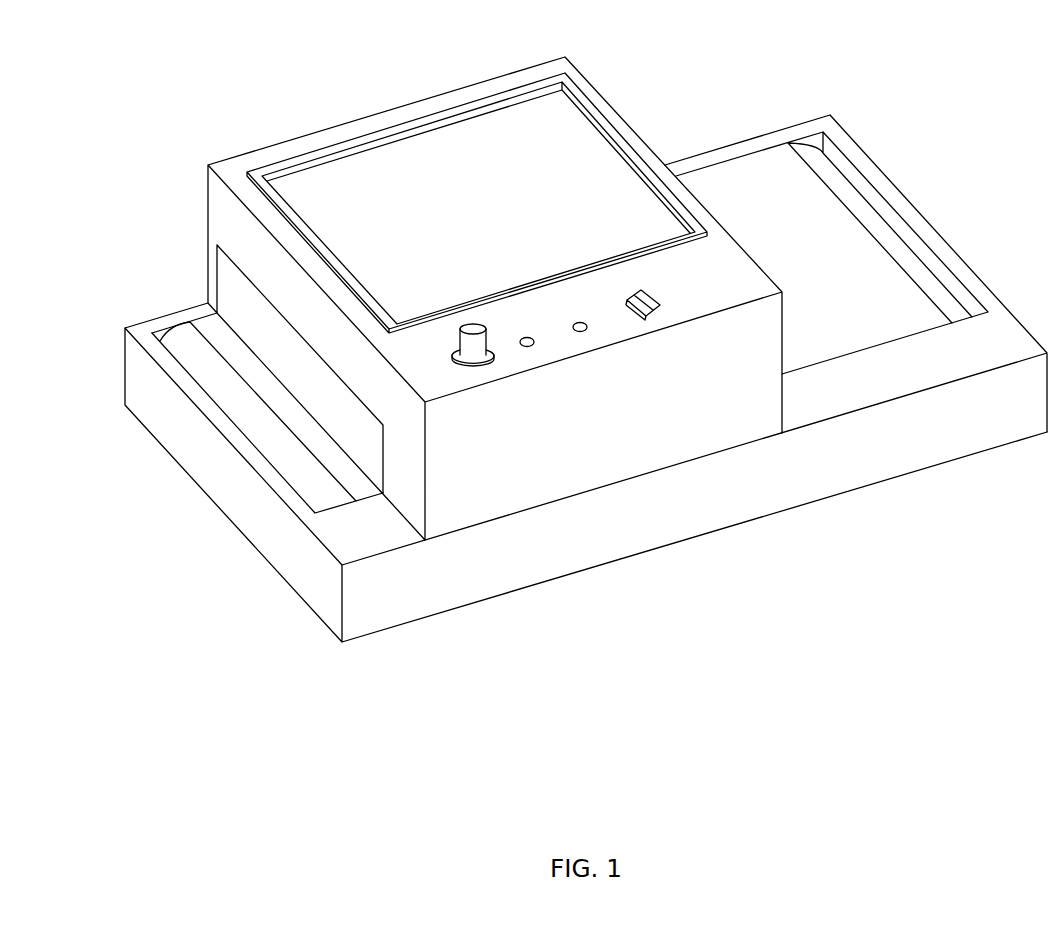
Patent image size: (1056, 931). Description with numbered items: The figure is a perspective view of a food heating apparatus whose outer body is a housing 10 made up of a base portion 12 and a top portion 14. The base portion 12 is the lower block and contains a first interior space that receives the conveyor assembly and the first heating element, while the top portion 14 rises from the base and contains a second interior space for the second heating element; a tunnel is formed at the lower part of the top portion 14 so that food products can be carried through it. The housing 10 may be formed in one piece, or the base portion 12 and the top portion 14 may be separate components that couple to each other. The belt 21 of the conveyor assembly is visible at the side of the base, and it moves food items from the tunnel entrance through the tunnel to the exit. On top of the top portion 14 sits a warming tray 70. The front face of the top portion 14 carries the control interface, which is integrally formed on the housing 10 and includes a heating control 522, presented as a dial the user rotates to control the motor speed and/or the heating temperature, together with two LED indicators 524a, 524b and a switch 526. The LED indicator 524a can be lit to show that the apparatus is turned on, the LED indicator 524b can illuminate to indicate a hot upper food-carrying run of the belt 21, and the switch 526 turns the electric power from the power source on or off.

The housing 10 is at (765, 467).
The base portion 12 is at (388, 602).
The top portion 14 is at (232, 168).
The belt 21 is at (747, 168).
The warming tray 70 is at (483, 130).
The heating control 522 is at (472, 348).
The LED indicator 524a is at (533, 344).
The LED indicator 524b is at (587, 330).
The switch 526 is at (658, 308).